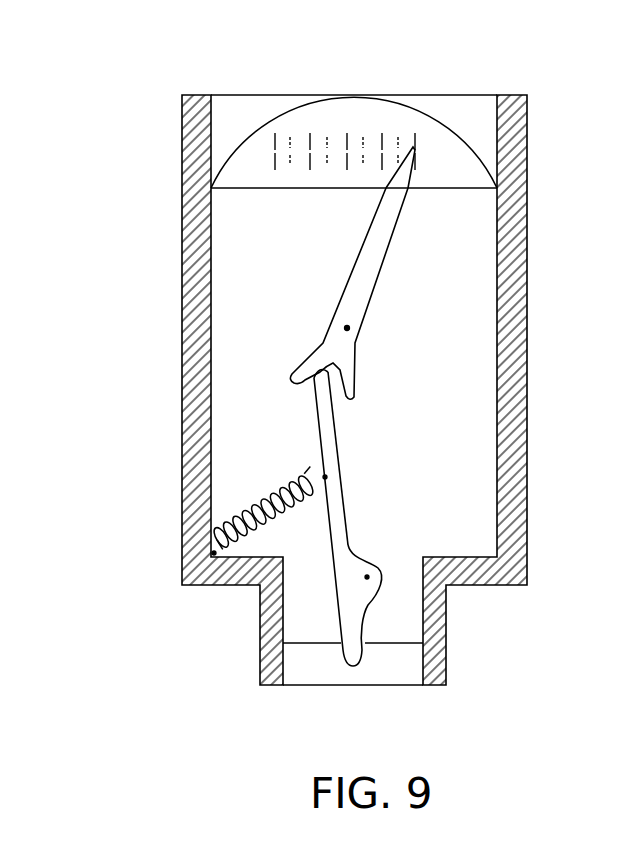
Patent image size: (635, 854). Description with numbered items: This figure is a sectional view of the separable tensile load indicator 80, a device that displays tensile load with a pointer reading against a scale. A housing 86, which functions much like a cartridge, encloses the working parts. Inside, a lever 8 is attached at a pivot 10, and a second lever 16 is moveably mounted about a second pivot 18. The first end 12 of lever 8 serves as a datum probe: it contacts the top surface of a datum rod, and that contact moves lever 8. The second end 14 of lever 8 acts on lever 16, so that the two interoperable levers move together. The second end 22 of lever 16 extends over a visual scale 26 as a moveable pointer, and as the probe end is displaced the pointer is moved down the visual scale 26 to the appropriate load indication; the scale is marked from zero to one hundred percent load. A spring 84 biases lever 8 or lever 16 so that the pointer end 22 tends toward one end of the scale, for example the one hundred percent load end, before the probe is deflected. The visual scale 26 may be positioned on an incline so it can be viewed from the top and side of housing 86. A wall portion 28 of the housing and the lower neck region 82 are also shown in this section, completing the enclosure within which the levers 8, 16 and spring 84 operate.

The separable tensile load indicator 80 is at (152, 118).
The housing 86 is at (182, 256).
The housing 28 is at (507, 95).
The outlet neck 82 is at (392, 673).
The visual scale 26 is at (323, 112).
The second end of lever 16 22 is at (417, 161).
The lever 16 is at (390, 245).
The second pivot 18 is at (347, 328).
The second end of lever 8 14 is at (333, 424).
The lever 8 is at (345, 502).
The pivot 10 is at (367, 577).
The first end of lever 8 12 is at (350, 662).
The spring 84 is at (245, 510).